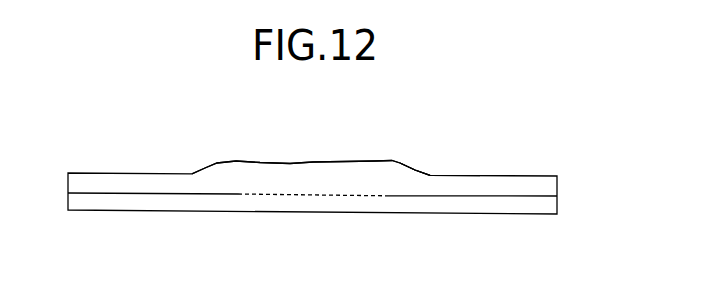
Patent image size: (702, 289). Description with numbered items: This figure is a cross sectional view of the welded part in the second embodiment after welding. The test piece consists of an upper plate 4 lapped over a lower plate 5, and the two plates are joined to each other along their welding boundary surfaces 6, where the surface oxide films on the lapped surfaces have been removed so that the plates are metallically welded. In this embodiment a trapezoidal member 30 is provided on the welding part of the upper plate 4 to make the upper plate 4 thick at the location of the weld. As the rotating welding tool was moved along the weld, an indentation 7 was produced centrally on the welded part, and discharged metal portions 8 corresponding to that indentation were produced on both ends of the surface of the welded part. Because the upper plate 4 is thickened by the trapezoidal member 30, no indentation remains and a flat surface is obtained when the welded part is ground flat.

The upper plate 4 is at (101, 173).
The lower plate 5 is at (100, 212).
The welding boundary surfaces 6 is at (312, 194).
The indentation 7 is at (314, 163).
The discharged metal portions 8 is at (237, 160).
The trapezoidal member 30 is at (418, 164).